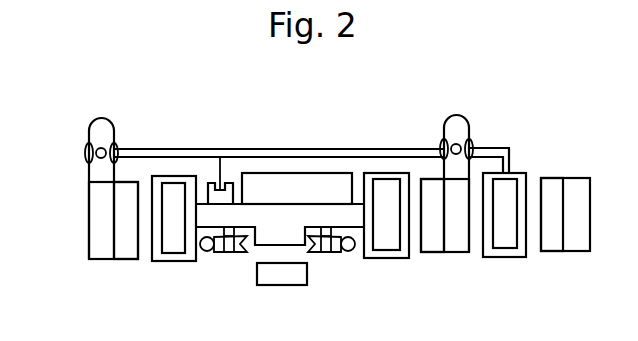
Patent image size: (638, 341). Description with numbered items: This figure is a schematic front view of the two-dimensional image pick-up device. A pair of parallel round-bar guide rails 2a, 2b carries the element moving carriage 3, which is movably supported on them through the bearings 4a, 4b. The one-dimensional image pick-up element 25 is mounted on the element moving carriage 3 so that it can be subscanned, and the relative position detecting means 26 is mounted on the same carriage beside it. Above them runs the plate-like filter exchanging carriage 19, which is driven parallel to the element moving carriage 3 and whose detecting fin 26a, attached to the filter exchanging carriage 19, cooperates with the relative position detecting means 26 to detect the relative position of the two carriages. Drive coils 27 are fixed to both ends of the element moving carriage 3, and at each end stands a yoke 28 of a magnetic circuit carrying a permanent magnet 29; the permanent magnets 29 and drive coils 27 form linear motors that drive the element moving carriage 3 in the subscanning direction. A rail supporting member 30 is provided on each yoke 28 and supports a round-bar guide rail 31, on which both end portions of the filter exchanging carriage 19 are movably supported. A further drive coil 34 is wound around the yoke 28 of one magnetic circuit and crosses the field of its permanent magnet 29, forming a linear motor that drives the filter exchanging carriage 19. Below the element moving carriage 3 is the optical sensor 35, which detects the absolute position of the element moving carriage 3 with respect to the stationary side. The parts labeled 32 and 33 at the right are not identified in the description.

The filter exchanging carriage 19 is at (150, 143).
The rail supporting member 30 is at (90, 123).
The guide rail 31 is at (96, 163).
The yoke 28 is at (88, 240).
The permanent magnet 29 is at (122, 248).
The drive coil 27 is at (170, 262).
The one-dimensional image pick-up element 25 is at (332, 180).
The relative position detecting means 26 is at (238, 180).
The detecting fin 26a is at (216, 168).
The element moving carriage 3 is at (305, 248).
The guide rail 2a is at (207, 251).
The guide rail 2b is at (352, 251).
The bearing 4a is at (235, 252).
The bearing 4b is at (330, 252).
The optical sensor 35 is at (282, 272).
The drive coil 34 is at (505, 257).
The partition 33 is at (550, 177).
The casing 32 is at (509, 240).